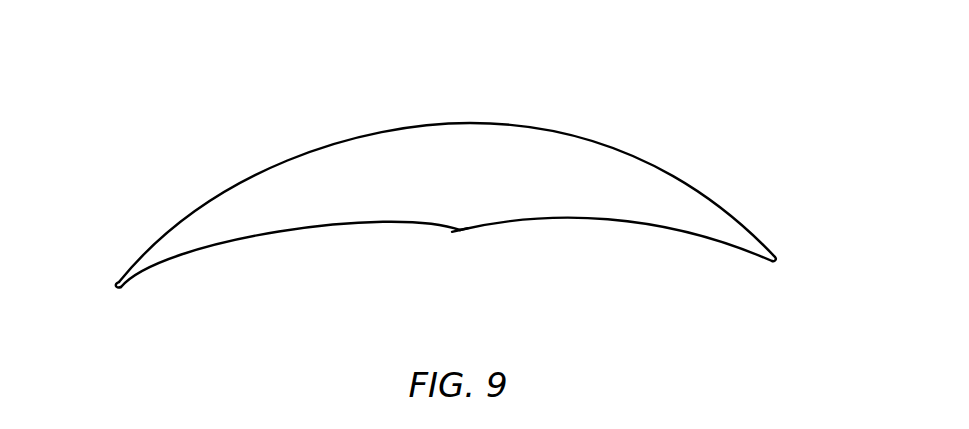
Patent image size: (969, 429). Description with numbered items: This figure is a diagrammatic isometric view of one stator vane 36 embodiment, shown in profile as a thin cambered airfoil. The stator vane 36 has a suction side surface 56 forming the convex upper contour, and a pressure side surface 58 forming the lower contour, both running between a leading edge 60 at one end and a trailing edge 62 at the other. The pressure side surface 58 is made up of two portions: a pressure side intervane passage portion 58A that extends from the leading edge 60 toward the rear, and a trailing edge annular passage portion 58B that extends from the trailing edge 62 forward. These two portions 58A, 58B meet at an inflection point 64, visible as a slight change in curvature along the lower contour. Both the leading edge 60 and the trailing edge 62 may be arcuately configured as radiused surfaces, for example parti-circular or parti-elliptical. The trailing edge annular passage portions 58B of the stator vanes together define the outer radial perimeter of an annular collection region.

The stator vane 36 is at (826, 179).
The suction side surface 56 is at (505, 122).
The pressure side surface 58 is at (446, 269).
The pressure side intervane passage portion 58A is at (294, 228).
The trailing edge annular passage portion 58B is at (592, 220).
The leading edge 60 is at (117, 286).
The trailing edge 62 is at (776, 259).
The inflection point 64 is at (460, 230).